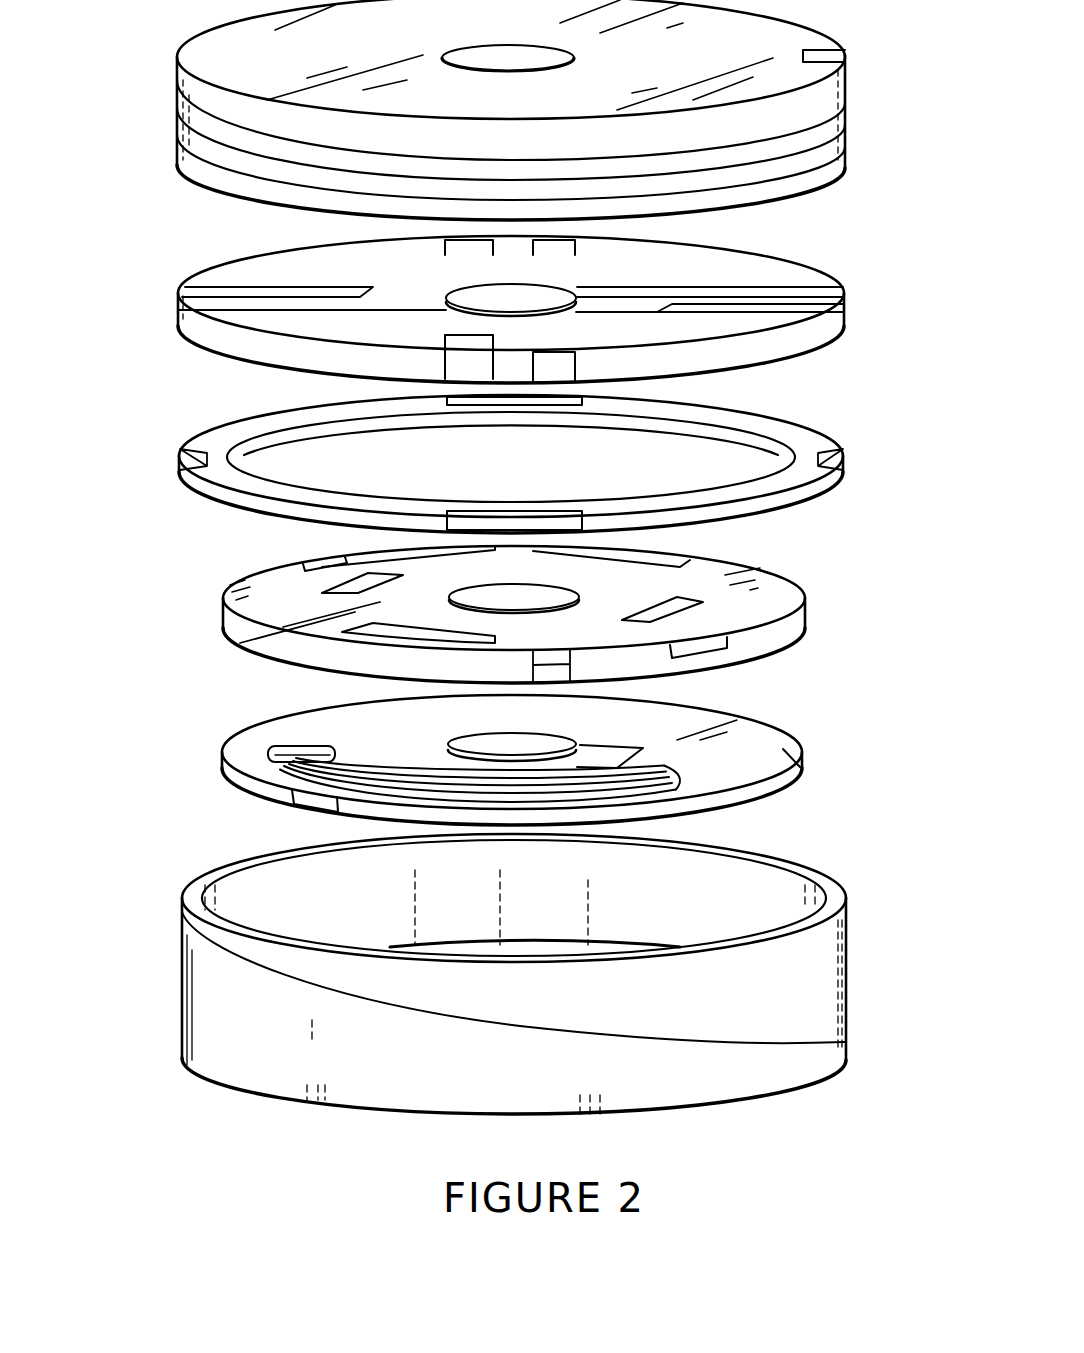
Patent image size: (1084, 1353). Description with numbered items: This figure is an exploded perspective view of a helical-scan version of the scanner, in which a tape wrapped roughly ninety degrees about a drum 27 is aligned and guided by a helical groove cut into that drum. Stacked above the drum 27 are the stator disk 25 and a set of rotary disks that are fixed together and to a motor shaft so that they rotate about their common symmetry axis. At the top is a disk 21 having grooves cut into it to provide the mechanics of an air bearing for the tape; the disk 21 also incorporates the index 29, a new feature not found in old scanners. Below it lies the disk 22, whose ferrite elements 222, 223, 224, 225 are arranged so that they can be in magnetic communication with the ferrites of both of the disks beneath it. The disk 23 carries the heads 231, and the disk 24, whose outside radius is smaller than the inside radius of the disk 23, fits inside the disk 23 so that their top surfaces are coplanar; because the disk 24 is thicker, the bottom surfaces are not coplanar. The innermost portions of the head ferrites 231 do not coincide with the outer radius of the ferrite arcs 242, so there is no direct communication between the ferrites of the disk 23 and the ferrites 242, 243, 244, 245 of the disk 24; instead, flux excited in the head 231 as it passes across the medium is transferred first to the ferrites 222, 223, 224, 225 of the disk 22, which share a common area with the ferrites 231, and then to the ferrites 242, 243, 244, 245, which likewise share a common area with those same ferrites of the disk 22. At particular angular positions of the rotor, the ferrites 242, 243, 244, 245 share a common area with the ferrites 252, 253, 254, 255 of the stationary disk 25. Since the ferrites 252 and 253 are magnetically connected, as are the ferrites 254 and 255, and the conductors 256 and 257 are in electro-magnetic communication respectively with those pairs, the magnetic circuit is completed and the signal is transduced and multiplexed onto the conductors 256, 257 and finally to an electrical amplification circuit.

The disk 21 is at (847, 140).
The index 29 is at (847, 55).
The disk 22 is at (793, 262).
The ferrite element 222 is at (430, 245).
The ferrite element 223 is at (577, 250).
The ferrite element 224 is at (180, 293).
The ferrite element 225 is at (178, 326).
The disk 23 is at (790, 416).
The head 231 is at (517, 402).
The disk 24 is at (790, 573).
The ferrite arc 242 is at (343, 560).
The ferrite element 243 is at (347, 633).
The ferrite element 244 is at (330, 588).
The ferrite element 245 is at (235, 645).
The stator disk 25 is at (793, 733).
The ferrite 252 is at (787, 787).
The ferrite 253 is at (674, 780).
The ferrite 254 is at (262, 742).
The ferrite 255 is at (597, 743).
The conductor 256 is at (273, 797).
The conductor 257 is at (433, 772).
The drum 27 is at (850, 980).